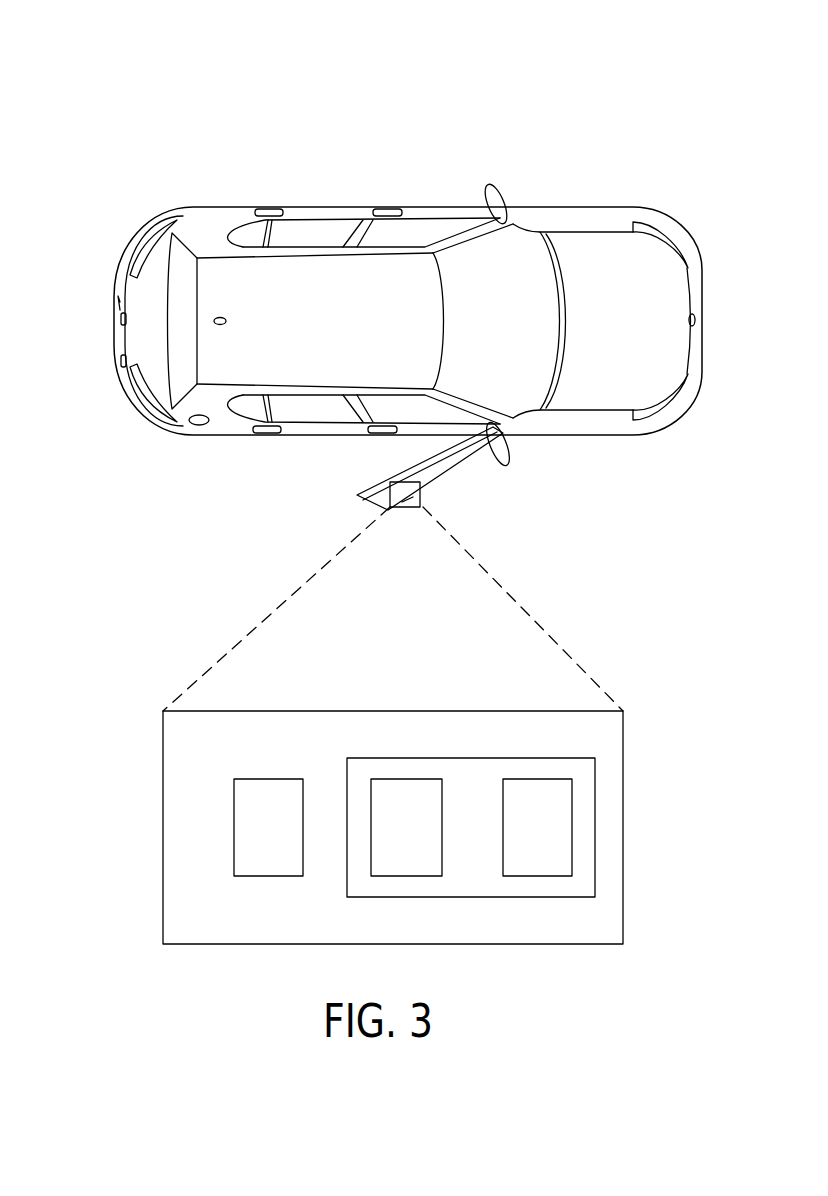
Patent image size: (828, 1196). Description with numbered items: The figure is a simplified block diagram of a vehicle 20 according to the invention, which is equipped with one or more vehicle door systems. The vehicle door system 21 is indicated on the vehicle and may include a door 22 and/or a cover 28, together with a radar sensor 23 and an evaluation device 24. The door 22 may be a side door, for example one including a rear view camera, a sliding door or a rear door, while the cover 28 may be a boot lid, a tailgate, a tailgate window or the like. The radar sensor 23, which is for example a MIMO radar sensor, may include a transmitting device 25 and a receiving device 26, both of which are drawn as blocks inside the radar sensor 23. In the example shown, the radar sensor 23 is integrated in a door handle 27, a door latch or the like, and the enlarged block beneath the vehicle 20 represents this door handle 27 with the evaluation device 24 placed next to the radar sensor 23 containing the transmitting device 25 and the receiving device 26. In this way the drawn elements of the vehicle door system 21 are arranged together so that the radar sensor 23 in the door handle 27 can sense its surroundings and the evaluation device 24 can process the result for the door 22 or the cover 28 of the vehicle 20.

The vehicle 20 is at (410, 98).
The vehicle door system 21 is at (482, 488).
The door 22 is at (323, 217).
The radar sensor 23 is at (595, 833).
The evaluation device 24 is at (259, 841).
The transmitting device 25 is at (395, 841).
The receiving device 26 is at (527, 841).
The door handle 27 is at (268, 209).
The cover 28 is at (497, 200).